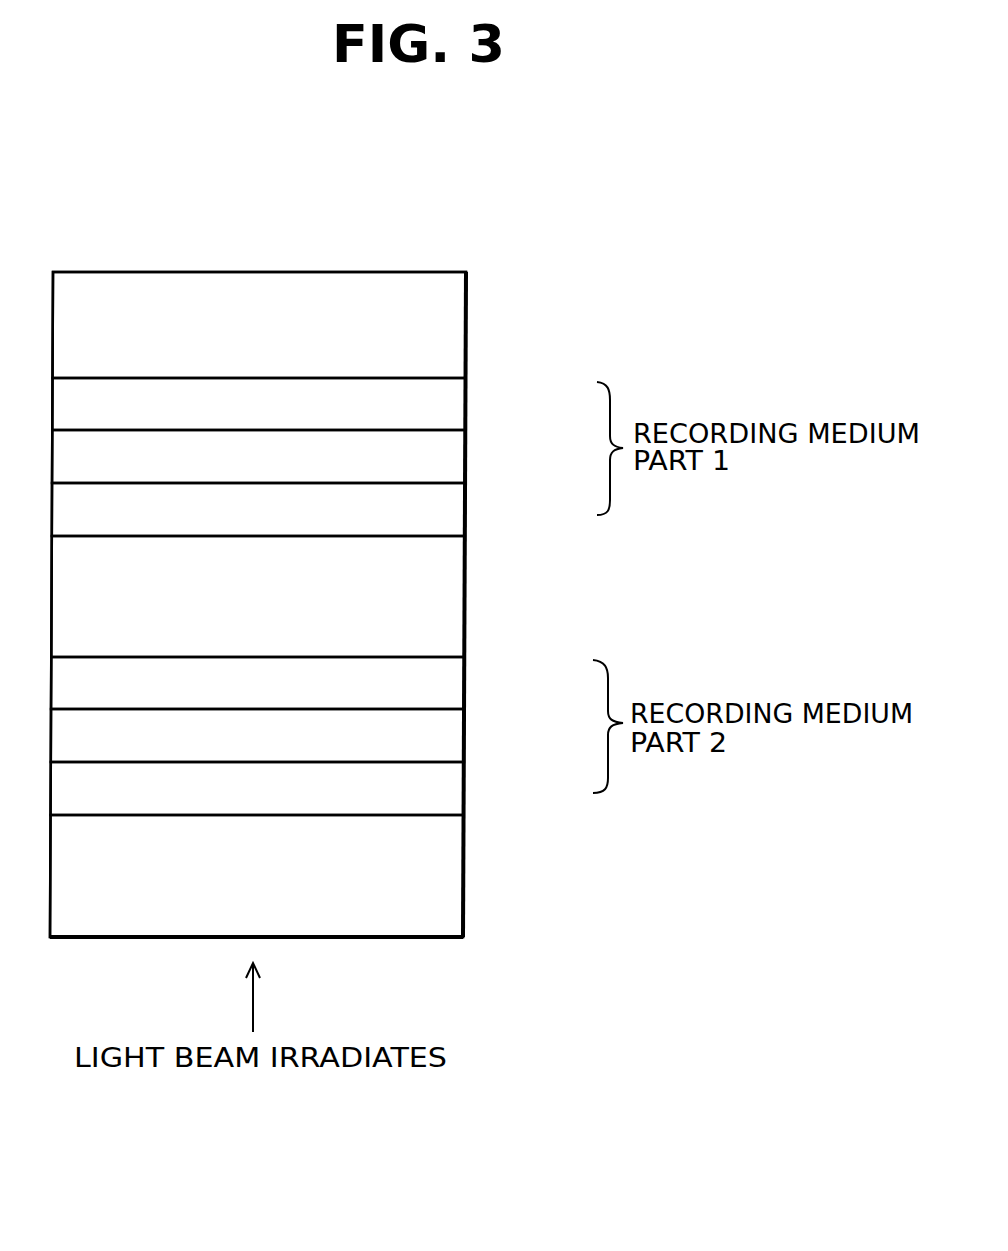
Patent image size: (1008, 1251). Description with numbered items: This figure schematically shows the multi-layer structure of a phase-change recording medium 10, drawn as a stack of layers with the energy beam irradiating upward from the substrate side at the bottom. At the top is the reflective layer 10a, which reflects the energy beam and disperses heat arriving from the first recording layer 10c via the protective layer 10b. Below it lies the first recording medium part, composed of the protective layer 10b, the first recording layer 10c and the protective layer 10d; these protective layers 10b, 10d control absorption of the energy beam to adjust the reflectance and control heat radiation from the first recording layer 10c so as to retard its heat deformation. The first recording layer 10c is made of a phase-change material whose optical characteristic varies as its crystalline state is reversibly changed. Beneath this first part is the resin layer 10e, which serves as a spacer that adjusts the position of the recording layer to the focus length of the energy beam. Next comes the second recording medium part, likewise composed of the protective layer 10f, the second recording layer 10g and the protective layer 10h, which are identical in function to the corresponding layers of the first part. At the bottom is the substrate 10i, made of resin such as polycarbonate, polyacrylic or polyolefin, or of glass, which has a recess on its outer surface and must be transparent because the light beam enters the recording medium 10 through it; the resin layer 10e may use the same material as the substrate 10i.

The phase-change recording medium 10 is at (402, 272).
The reflective layer 10a is at (466, 319).
The protective layer 10b is at (466, 400).
The first recording layer 10c is at (466, 452).
The protective layer 10d is at (466, 503).
The resin layer 10e is at (465, 598).
The protective layer 10f is at (465, 680).
The second recording layer 10g is at (464, 733).
The protective layer 10h is at (464, 787).
The substrate 10i is at (464, 878).